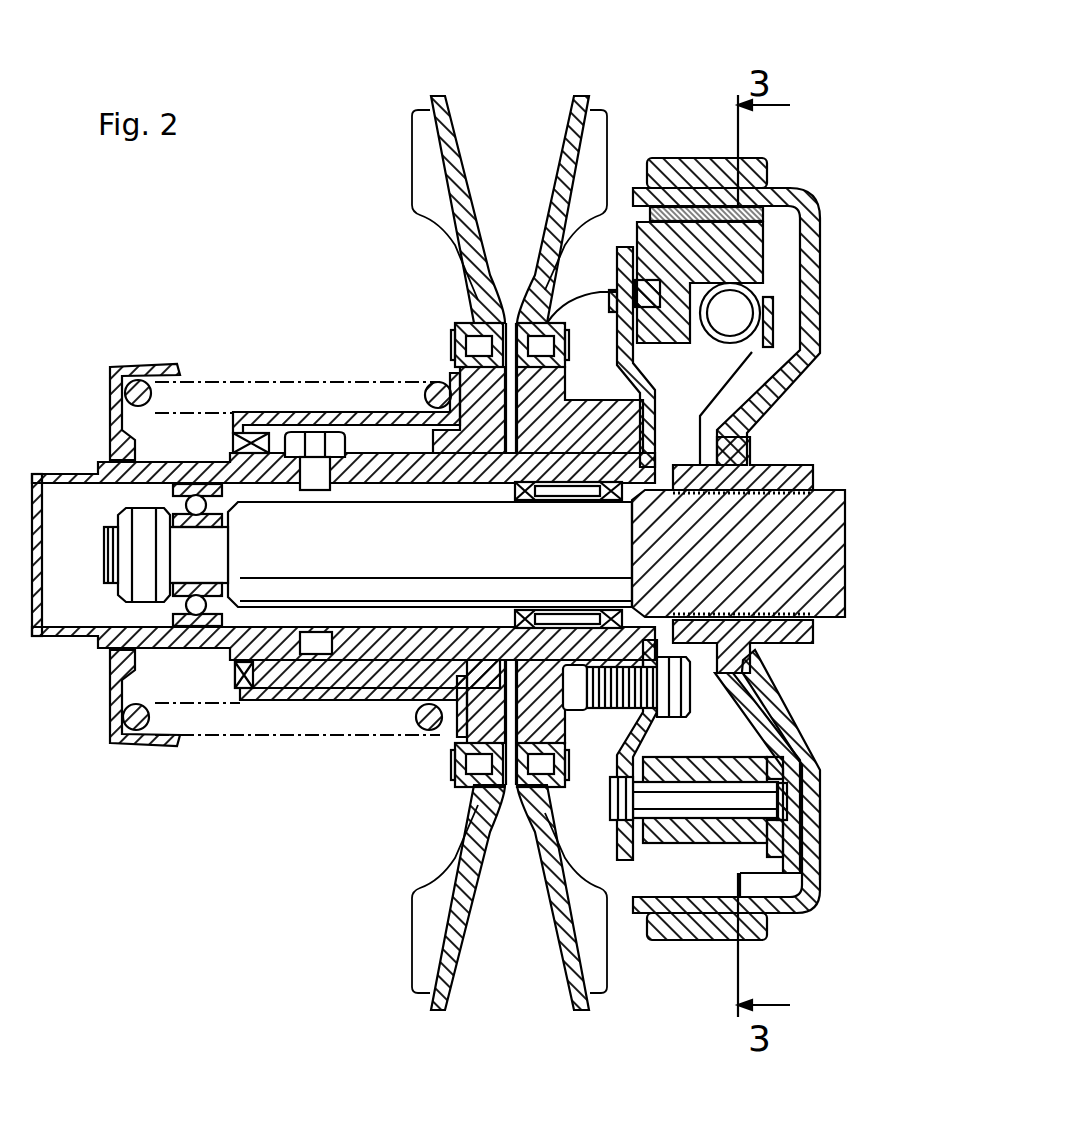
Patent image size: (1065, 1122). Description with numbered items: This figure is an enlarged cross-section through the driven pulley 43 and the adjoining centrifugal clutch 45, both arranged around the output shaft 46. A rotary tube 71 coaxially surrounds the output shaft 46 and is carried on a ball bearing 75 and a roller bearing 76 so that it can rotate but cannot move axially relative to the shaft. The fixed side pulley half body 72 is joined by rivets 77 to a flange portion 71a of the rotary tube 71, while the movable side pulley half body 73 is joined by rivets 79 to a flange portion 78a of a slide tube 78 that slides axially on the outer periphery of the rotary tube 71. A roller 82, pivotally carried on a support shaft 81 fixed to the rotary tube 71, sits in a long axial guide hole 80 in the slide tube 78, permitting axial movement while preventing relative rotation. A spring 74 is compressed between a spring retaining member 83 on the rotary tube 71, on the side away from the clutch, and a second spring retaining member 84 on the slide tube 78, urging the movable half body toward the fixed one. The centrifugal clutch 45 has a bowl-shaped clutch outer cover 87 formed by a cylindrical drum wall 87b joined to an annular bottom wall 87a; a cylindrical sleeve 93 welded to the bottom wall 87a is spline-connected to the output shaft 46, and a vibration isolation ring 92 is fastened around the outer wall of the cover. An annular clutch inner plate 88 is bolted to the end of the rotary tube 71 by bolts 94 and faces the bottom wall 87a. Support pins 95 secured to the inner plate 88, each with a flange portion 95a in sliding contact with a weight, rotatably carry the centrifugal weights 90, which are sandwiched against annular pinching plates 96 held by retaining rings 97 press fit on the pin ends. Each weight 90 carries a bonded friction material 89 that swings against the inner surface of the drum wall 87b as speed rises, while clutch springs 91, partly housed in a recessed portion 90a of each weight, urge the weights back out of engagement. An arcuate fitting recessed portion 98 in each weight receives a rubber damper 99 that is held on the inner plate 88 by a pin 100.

The driven pulley 43 is at (405, 132).
The centrifugal clutch 45 is at (813, 201).
The output shaft 46 is at (845, 528).
The rotary tube 71 is at (393, 478).
The flange portion 71a is at (548, 322).
The fixed side pulley half body 72 is at (580, 94).
The movable side pulley half body 73 is at (440, 96).
The spring 74 is at (425, 397).
The ball bearing 75 is at (228, 525).
The roller bearing 76 is at (565, 493).
The rivets 77 is at (538, 335).
The slide tube 78 is at (292, 683).
The flange portion 78a is at (453, 357).
The rivets 79 is at (450, 358).
The guide hole 80 is at (413, 456).
The support shaft 81 is at (312, 490).
The roller 82 is at (298, 437).
The spring retaining member 83 is at (133, 372).
The second spring retaining member 84 is at (437, 737).
The clutch outer cover 87 is at (907, 926).
The bottom wall 87a is at (807, 883).
The drum wall 87b is at (757, 940).
The clutch inner plate 88 is at (625, 343).
The friction material 89 is at (706, 213).
The centrifugal weights 90 is at (665, 188).
The recessed portion 90a is at (766, 316).
The clutch springs 91 is at (735, 344).
The vibration isolation ring 92 is at (674, 160).
The cylindrical sleeve 93 is at (763, 466).
The bolts 94 is at (625, 708).
The support pins 95 is at (703, 843).
The flange portion 95a is at (645, 762).
The annular pinching plates 96 is at (772, 766).
The retaining rings 97 is at (789, 820).
The fitting recessed portion 98 is at (608, 290).
The dampers 99 is at (652, 318).
The pins 100 is at (612, 302).